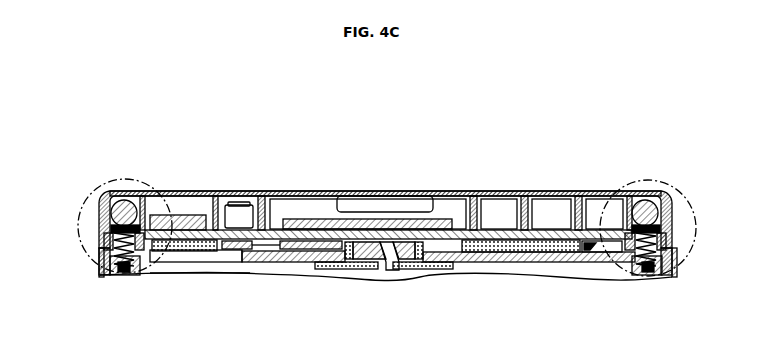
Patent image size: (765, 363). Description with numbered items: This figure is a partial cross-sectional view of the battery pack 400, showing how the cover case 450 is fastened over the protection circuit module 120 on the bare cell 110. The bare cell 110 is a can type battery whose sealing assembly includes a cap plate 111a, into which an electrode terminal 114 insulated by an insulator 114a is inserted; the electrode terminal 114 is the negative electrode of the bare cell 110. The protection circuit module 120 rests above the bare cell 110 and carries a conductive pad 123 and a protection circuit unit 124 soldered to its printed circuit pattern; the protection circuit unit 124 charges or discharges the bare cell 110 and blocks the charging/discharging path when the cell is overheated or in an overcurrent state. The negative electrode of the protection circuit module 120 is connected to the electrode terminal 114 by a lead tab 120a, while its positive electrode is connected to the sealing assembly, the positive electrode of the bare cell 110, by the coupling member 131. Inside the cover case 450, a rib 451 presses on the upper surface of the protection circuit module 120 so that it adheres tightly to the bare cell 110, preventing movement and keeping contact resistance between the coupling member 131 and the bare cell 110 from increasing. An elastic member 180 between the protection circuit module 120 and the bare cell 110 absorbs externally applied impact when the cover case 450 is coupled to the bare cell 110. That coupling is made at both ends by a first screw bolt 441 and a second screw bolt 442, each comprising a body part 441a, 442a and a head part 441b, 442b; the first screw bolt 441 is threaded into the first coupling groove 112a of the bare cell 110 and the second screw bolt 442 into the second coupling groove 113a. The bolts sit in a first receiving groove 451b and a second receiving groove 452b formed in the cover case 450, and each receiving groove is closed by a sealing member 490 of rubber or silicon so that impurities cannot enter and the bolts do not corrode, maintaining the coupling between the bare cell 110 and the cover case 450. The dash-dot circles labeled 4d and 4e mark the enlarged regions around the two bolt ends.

The battery pack 400 is at (84, 102).
The bare cell 110 is at (97, 273).
The cover case 450 is at (541, 191).
The rib 451 is at (270, 210).
The conductive pad 123 is at (240, 212).
The protection circuit unit 124 is at (178, 222).
The protection circuit module 120 is at (459, 229).
The elastic member 180 is at (206, 251).
The lead tab 120a is at (264, 250).
The insulator 114a is at (348, 262).
The electrode terminal 114 is at (390, 270).
The cap plate 111a is at (496, 263).
The coupling member 131 is at (600, 253).
The sealing member 490 is at (124, 207).
The second screw bolt 442 is at (108, 229).
The head part of second screw bolt 442b is at (110, 237).
The second receiving groove 452b is at (99, 256).
The body part of second screw bolt 442a is at (140, 262).
The second coupling groove 113a is at (124, 270).
The first screw bolt 441 is at (665, 229).
The head part of first screw bolt 441b is at (666, 238).
The first receiving groove 451b is at (672, 255).
The body part of first screw bolt 441a is at (641, 262).
The first coupling groove 112a is at (648, 270).
The detail region 4e is at (82, 200).
The detail region 4d is at (690, 198).